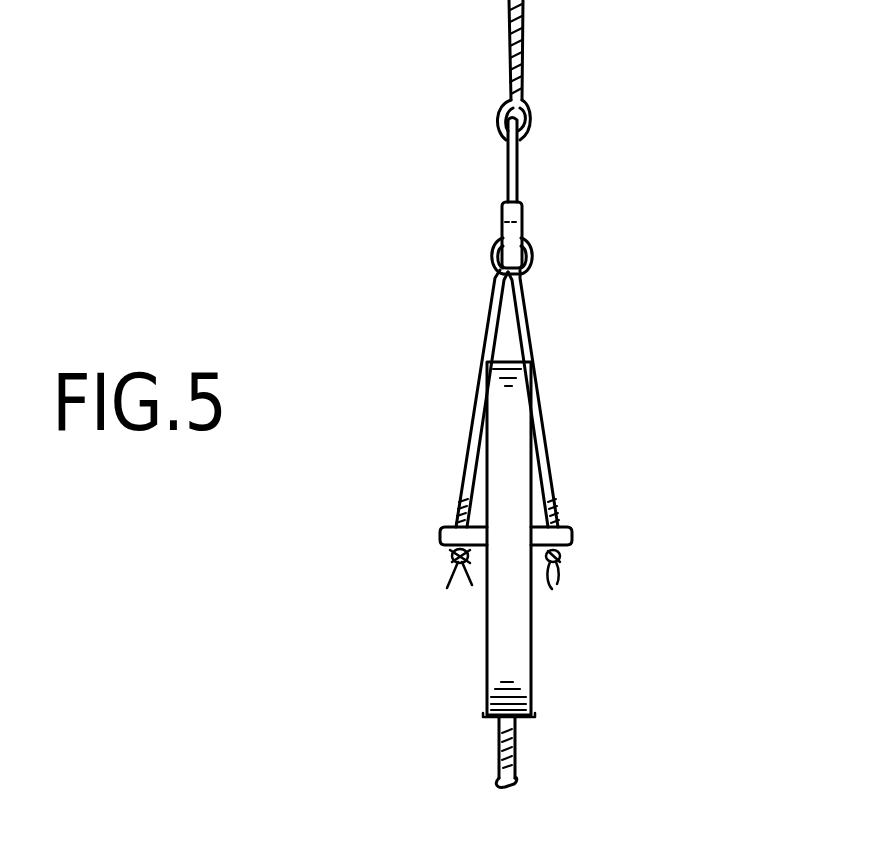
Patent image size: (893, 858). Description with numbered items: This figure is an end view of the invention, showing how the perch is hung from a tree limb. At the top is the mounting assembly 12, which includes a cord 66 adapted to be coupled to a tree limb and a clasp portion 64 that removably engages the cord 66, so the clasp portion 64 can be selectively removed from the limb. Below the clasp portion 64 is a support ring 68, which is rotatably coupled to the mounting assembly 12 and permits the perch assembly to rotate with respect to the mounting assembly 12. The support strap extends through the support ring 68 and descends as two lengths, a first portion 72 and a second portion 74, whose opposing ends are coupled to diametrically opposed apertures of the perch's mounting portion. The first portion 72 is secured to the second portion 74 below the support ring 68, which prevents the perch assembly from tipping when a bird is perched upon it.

The mounting assembly 12 is at (447, 134).
The cord 66 is at (524, 45).
The clasp portion 64 is at (521, 148).
The support ring 68 is at (522, 215).
The first portion 72 is at (530, 338).
The second portion 74 is at (485, 332).